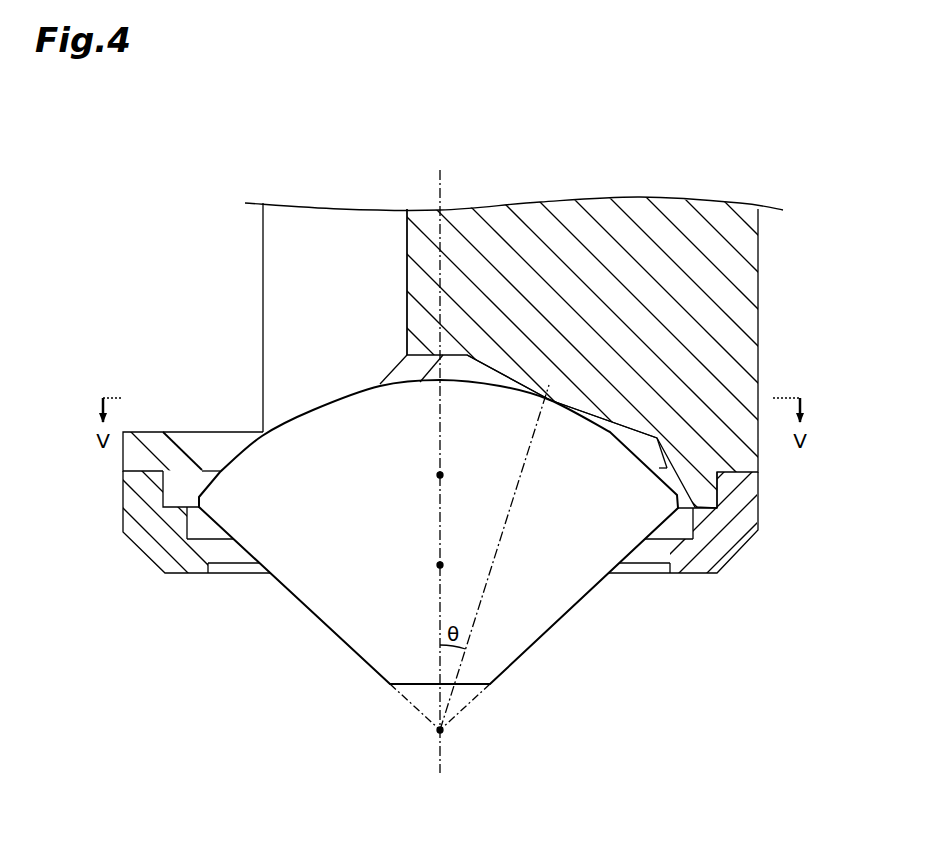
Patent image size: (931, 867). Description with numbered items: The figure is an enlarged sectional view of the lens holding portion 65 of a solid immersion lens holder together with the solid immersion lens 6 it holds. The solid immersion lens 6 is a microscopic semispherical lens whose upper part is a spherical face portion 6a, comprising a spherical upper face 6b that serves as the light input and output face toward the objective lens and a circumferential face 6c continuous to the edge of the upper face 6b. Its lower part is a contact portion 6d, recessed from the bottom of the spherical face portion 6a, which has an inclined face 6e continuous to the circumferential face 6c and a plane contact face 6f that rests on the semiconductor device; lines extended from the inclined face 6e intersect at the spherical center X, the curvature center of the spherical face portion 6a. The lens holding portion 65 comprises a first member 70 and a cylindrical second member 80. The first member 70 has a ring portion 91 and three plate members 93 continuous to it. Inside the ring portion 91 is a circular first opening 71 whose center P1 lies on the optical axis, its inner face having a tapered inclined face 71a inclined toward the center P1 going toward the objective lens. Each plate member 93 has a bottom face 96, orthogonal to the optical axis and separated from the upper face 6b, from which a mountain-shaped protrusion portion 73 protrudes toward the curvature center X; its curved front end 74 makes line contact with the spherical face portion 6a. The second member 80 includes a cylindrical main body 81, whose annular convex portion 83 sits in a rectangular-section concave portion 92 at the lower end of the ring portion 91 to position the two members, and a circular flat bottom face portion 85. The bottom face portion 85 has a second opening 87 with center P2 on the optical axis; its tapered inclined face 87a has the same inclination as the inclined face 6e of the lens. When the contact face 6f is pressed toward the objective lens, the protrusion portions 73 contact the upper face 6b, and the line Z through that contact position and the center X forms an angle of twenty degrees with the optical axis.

The solid immersion lens 6 is at (438, 531).
The spherical face portion 6a is at (307, 410).
The upper face 6b is at (342, 393).
The circumferential face 6c is at (687, 510).
The contact portion 6d is at (578, 588).
The inclined face 6e is at (323, 636).
The contact face 6f is at (473, 686).
The lens holding portion 65 is at (234, 304).
The first member 70 is at (465, 345).
The first opening 71 is at (189, 472).
The inclined face 71a is at (222, 462).
The protrusion portion 73 is at (543, 382).
The front end 74 is at (547, 403).
The second member 80 is at (738, 500).
The main body 81 is at (135, 490).
The convex portion 83 is at (146, 492).
The bottom face portion 85 is at (190, 566).
The second opening 87 is at (247, 615).
The inclined face 87a is at (238, 570).
The ring portion 91 is at (121, 448).
The concave portion 92 is at (153, 482).
The plate member 93 is at (343, 242).
The bottom face 96 is at (472, 350).
The center of the first opening P1 is at (437, 475).
The center of the second opening P2 is at (437, 565).
The spherical center X is at (438, 732).
The line Z is at (505, 540).